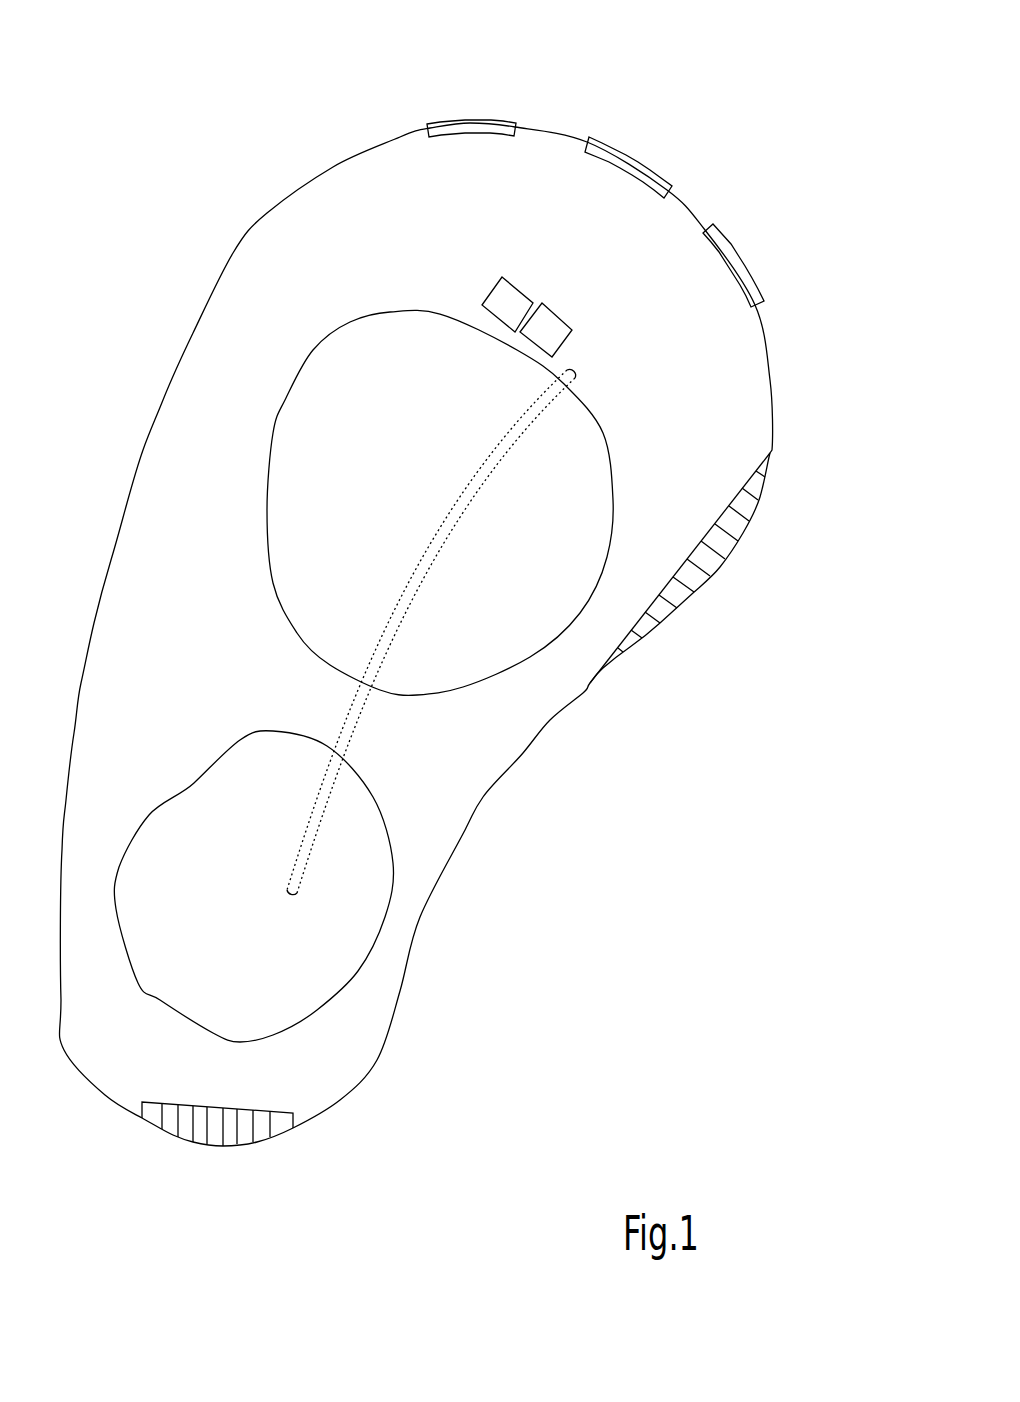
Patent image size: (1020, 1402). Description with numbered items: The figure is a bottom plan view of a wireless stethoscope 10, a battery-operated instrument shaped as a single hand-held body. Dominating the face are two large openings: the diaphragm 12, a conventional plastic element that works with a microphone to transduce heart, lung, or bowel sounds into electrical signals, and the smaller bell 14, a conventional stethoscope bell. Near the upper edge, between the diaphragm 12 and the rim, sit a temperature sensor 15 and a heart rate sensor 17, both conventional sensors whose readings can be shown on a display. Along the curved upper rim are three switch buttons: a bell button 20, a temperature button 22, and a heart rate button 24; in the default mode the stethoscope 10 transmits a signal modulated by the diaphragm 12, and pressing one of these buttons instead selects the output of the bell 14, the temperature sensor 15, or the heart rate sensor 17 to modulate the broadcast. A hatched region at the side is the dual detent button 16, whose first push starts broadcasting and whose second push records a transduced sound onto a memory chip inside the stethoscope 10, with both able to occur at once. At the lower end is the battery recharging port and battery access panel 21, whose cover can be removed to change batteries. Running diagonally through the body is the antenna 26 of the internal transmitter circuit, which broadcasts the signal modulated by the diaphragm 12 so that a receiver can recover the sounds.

The wireless stethoscope 10 is at (310, 108).
The diaphragm 12 is at (538, 655).
The bell 14 is at (383, 923).
The temperature sensor 15 is at (572, 329).
The dual detent button 16 is at (707, 592).
The heart rate sensor 17 is at (488, 292).
The bell button 20 is at (737, 260).
The battery recharging port/battery access panel 21 is at (258, 1142).
The temperature button 22 is at (470, 119).
The heart rate button 24 is at (632, 158).
The antenna 26 is at (447, 513).